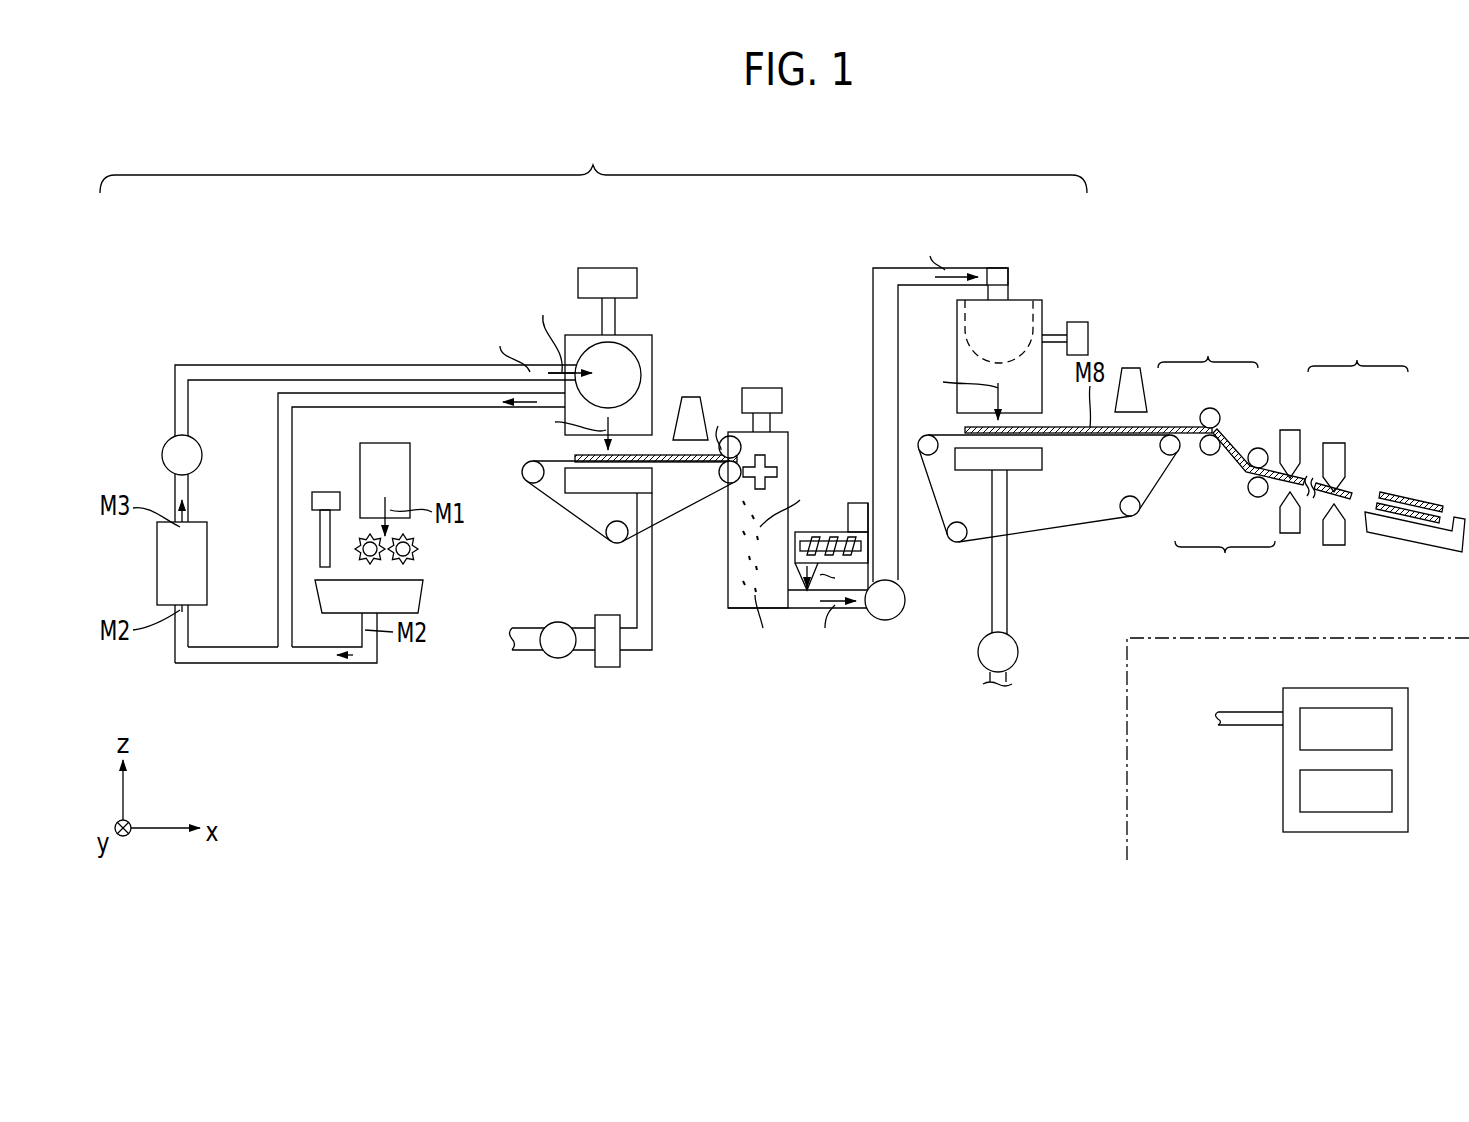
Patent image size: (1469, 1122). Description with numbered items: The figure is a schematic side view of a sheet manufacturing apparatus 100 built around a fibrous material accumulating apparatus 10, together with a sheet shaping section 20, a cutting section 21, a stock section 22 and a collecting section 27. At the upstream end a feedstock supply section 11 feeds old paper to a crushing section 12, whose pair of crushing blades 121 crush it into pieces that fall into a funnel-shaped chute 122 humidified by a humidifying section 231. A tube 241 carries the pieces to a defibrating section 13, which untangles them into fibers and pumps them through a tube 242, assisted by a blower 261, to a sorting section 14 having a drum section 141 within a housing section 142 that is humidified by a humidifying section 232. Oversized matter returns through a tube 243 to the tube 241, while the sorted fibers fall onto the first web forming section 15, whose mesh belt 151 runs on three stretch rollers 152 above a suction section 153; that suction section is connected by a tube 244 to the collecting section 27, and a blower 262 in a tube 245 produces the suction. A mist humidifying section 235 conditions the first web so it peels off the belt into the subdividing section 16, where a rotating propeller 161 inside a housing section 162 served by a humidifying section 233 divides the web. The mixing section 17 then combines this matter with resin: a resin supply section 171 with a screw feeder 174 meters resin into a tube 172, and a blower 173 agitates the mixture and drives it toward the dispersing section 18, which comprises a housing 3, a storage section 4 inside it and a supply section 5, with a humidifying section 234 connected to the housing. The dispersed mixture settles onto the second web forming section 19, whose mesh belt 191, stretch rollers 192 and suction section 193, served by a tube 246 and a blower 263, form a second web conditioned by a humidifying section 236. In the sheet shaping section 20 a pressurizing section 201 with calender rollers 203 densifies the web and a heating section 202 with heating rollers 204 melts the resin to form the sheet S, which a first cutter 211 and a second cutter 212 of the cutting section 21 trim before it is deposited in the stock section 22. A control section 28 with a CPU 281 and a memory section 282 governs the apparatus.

The sheet manufacturing apparatus 100 is at (1197, 195).
The fibrous material accumulating apparatus 10 is at (593, 163).
The feedstock supply section 11 is at (375, 443).
The crushing section 12 is at (430, 543).
The crushing blades 121 is at (375, 563).
The chute 122 is at (410, 598).
The defibrating section 13 is at (157, 565).
The sorting section 14 is at (678, 322).
The drum section 141 is at (640, 350).
The housing section 142 is at (640, 335).
The first web forming section 15 is at (660, 547).
The mesh belt 151 is at (673, 515).
The stretch rollers 152 is at (524, 465).
The suction section 153 is at (652, 475).
The subdividing section 16 is at (790, 440).
The propeller 161 is at (772, 466).
The housing section 162 is at (737, 612).
The mixing section 17 is at (863, 628).
The resin supply section 171 is at (848, 503).
The tube 172 is at (903, 585).
The blower 173 is at (893, 618).
The screw feeder 174 is at (808, 534).
The dispersing section 18 is at (1045, 240).
The housing 3 is at (955, 332).
The storage section 4 is at (1017, 318).
The supply section 5 is at (995, 268).
The second web forming section 19 is at (1098, 530).
The mesh belt 191 is at (1050, 528).
The stretch rollers 192 is at (925, 436).
The suction section 193 is at (1042, 460).
The sheet shaping section 20 is at (1258, 398).
The pressurizing section 201 is at (1208, 394).
The heating section 202 is at (1225, 514).
The calender rollers 203 is at (1204, 410).
The heating rollers 204 is at (1249, 464).
The cutting section 21 is at (1344, 440).
The first cutter 211 is at (1302, 420).
The second cutter 212 is at (1352, 428).
The stock section 22 is at (1428, 545).
The humidifying section 231 is at (327, 492).
The humidifying section 232 is at (608, 268).
The humidifying section 233 is at (762, 388).
The humidifying section 234 is at (1078, 322).
The humidifying section 235 is at (690, 397).
The humidifying section 236 is at (1135, 368).
The tube 241 is at (330, 664).
The tube 242 is at (206, 364).
The tube 243 is at (400, 392).
The tube 244 is at (655, 620).
The tube 245 is at (583, 651).
The tube 246 is at (1008, 602).
The blower 261 is at (168, 440).
The blower 262 is at (550, 660).
The blower 263 is at (1020, 650).
The collecting section 27 is at (615, 668).
The control section 28 is at (1393, 838).
The CPU 281 is at (1392, 723).
The memory section 282 is at (1392, 788).
The sheet S is at (1276, 465).